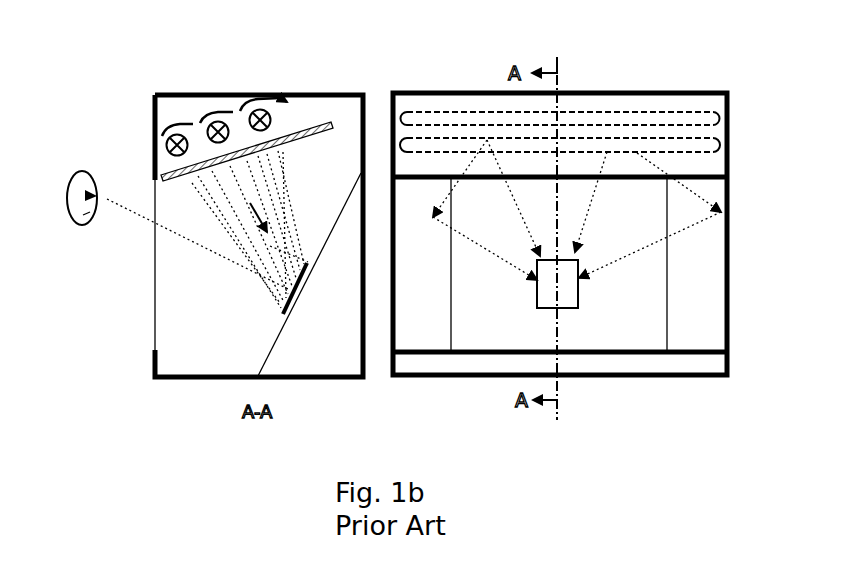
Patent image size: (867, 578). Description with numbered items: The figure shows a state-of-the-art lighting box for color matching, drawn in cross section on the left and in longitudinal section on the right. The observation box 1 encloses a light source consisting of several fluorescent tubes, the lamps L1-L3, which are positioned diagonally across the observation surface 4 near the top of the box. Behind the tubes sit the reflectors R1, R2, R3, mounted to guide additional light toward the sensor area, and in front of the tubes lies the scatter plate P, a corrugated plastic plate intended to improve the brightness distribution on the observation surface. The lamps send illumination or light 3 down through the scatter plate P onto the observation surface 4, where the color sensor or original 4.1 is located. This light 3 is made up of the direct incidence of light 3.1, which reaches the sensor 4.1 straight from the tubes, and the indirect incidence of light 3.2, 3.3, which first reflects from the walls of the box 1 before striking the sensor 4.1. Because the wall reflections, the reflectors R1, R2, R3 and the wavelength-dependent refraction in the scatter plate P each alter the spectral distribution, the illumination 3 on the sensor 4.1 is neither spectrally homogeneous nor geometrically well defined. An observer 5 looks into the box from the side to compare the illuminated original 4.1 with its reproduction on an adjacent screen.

The observation box 1 is at (153, 365).
The illumination or light 3 is at (248, 229).
The direct incidence of light 3.1 is at (579, 234).
The indirect incidence of light 3.2 is at (487, 253).
The indirect incidence of light 3.3 is at (687, 231).
The observation surface 4 is at (277, 343).
The color sensor/original 4.1 is at (303, 267).
The observer 5 is at (89, 173).
The scatter plate P is at (300, 139).
The reflector R1 is at (173, 122).
The reflector R2 is at (212, 107).
The reflector R3 is at (245, 95).
The lamps L1-L3 is at (291, 98).